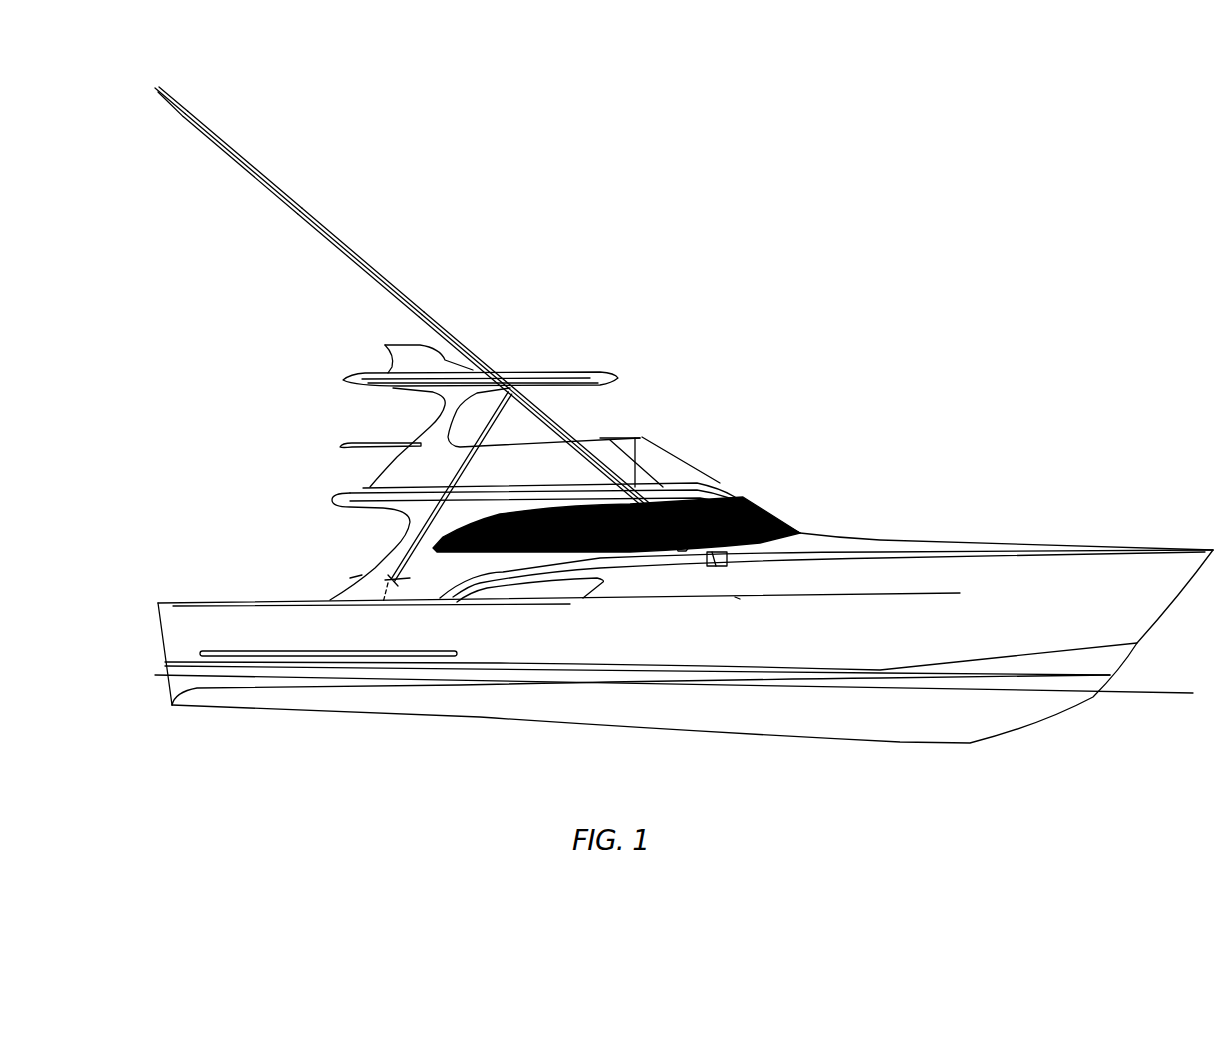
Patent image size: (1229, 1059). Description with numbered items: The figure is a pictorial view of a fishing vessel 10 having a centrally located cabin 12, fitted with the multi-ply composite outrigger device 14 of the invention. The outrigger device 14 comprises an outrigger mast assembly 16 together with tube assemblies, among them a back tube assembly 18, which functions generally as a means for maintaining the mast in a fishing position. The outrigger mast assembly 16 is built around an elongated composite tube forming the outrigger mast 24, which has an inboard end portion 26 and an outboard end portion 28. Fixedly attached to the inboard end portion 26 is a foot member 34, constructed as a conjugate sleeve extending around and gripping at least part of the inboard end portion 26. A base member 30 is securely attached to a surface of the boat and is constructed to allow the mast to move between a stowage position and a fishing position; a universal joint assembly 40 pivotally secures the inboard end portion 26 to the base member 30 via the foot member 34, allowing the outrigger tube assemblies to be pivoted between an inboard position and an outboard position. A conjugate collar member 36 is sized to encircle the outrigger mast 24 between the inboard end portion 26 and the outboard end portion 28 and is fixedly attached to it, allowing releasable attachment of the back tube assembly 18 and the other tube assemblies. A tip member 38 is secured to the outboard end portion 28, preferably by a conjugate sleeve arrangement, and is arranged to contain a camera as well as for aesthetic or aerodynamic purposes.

The fishing vessel 10 is at (970, 540).
The cabin 12 is at (713, 480).
The outrigger device 14 is at (593, 418).
The outrigger mast assembly 16 is at (445, 318).
The back tube assembly 18 is at (421, 533).
The outrigger mast 24 is at (378, 270).
The inboard end portion 26 is at (727, 490).
The outboard end portion 28 is at (188, 110).
The base member 30 is at (797, 537).
The foot member 34 is at (683, 548).
The collar member 36 is at (513, 390).
The tip member 38 is at (162, 87).
The universal joint assembly 40 is at (710, 555).